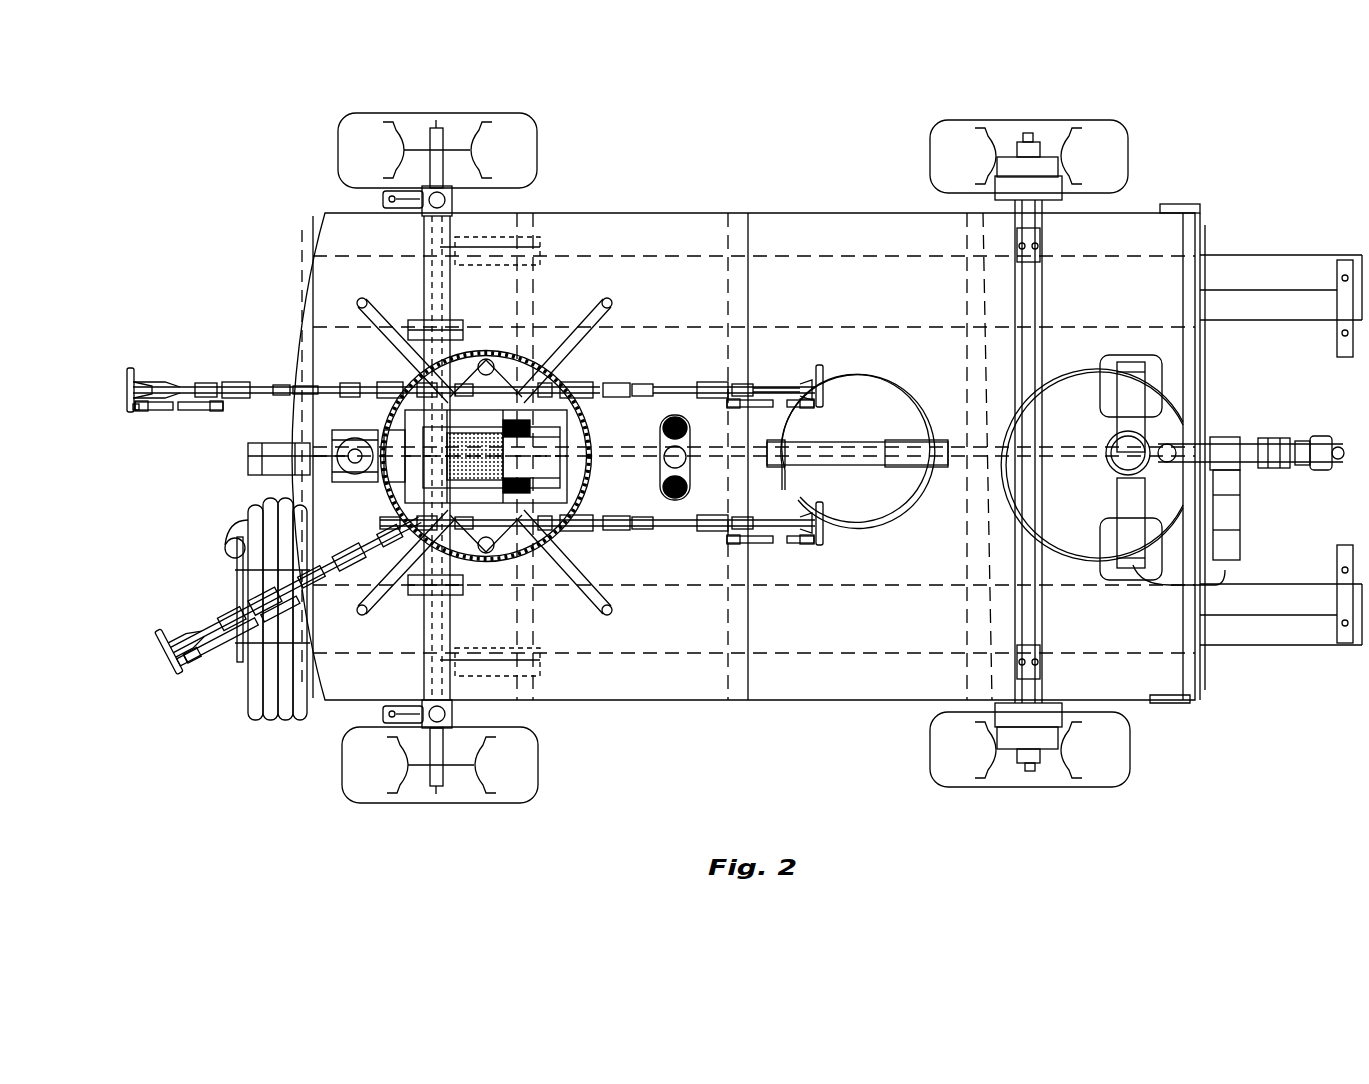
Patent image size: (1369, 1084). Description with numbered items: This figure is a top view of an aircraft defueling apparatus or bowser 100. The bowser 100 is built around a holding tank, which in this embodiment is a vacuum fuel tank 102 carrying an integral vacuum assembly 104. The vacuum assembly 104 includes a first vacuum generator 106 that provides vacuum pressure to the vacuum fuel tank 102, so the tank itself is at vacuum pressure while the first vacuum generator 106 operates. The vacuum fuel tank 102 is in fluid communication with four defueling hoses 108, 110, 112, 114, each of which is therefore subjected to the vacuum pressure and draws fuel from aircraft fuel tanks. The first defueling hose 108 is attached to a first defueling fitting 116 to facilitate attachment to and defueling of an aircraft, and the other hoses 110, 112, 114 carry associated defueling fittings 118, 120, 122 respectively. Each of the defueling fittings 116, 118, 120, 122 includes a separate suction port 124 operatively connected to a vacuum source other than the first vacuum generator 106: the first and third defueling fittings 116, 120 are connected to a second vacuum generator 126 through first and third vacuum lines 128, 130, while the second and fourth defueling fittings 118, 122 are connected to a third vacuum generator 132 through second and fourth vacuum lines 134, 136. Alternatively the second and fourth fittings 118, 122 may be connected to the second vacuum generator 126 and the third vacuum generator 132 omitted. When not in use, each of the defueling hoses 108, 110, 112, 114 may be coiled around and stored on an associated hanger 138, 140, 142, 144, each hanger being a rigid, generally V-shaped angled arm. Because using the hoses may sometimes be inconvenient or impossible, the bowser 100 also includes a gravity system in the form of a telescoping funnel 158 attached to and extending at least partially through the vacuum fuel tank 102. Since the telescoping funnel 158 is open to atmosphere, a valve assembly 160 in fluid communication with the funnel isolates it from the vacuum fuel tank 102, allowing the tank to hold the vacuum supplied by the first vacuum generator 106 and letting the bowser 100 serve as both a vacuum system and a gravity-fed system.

The aircraft defueling apparatus or bowser 100 is at (290, 160).
The vacuum fuel tank 102 is at (860, 213).
The vacuum assembly 104 is at (588, 420).
The first vacuum generator 106 is at (510, 462).
The first defueling hose 108 is at (180, 388).
The second defueling hose 110 is at (195, 628).
The third defueling hose 112 is at (765, 387).
The fourth defueling hose 114 is at (775, 520).
The first defueling fitting 116 is at (128, 382).
The second defueling fitting 118 is at (160, 650).
The third defueling fitting 120 is at (822, 388).
The fourth defueling fitting 122 is at (825, 530).
The suction ports 124 is at (133, 410).
The second vacuum generator 126 is at (610, 303).
The first vacuum line 128 is at (187, 410).
The third vacuum line 130 is at (760, 387).
The third vacuum generator 132 is at (560, 485).
The second vacuum line 134 is at (220, 648).
The fourth vacuum line 136 is at (765, 543).
The hanger 138 is at (355, 300).
The hanger 140 is at (362, 612).
The hanger 142 is at (570, 375).
The hanger 144 is at (607, 612).
The telescoping funnel 158 is at (1183, 400).
The valve assembly 160 is at (1255, 512).